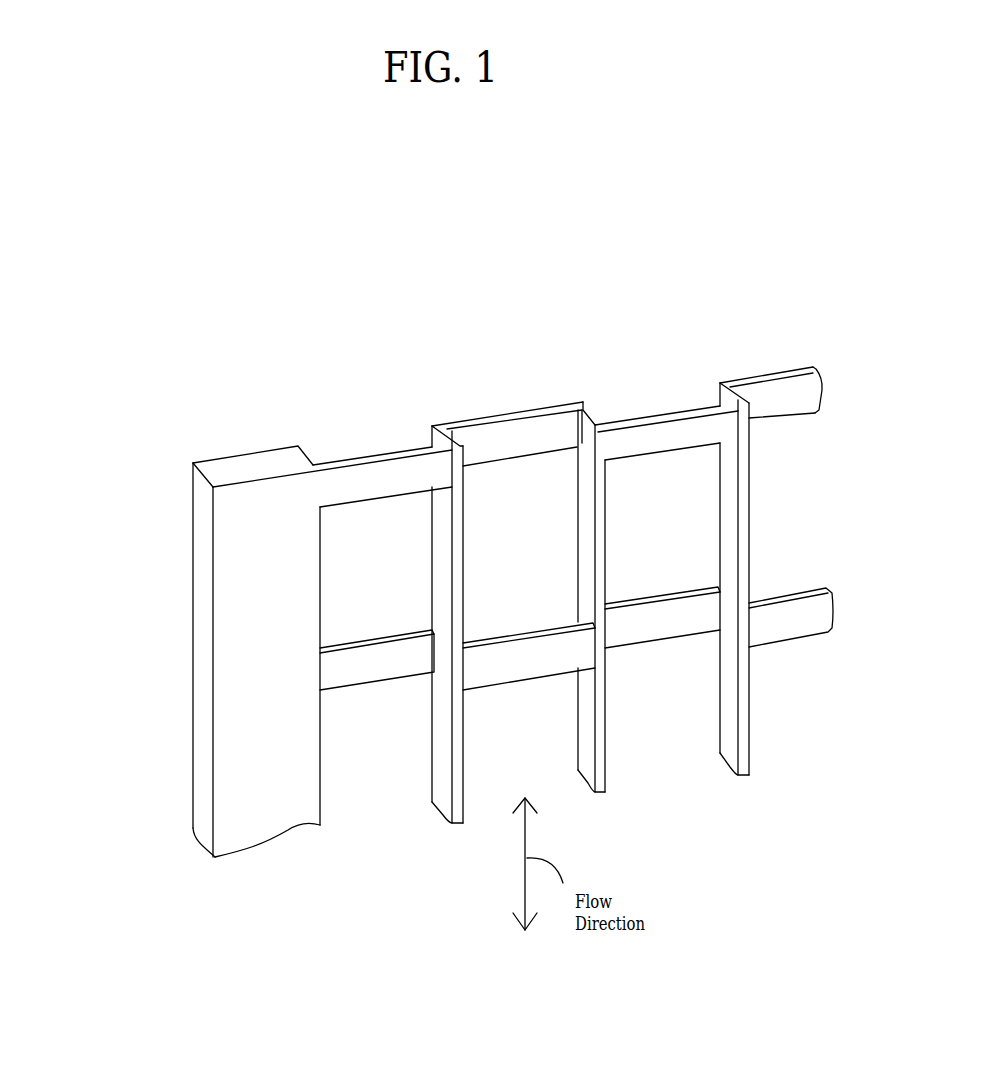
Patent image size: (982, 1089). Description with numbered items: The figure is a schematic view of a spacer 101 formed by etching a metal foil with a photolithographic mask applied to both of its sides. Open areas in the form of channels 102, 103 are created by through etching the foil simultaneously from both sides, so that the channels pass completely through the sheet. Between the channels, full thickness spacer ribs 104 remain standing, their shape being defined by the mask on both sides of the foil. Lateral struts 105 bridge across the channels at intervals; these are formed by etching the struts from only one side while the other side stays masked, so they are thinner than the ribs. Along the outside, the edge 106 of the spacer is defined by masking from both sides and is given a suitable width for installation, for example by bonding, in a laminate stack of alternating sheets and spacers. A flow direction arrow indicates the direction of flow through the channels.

The spacer 101 is at (315, 377).
The channel 102 is at (362, 584).
The channel 103 is at (507, 502).
The spacer rib 104 is at (463, 584).
The lateral strut 105 is at (363, 670).
The edge 106 is at (205, 666).